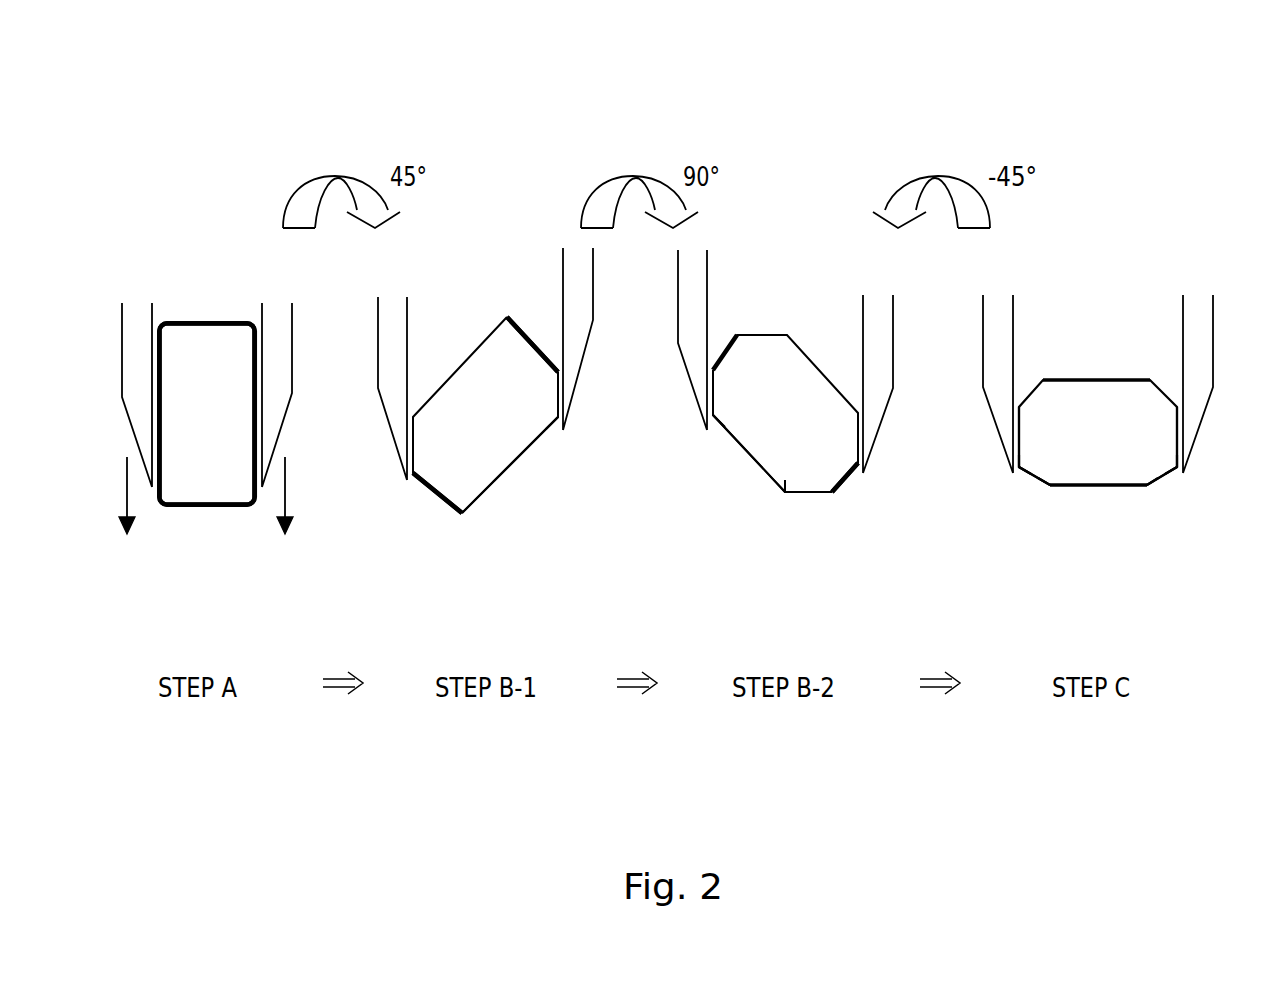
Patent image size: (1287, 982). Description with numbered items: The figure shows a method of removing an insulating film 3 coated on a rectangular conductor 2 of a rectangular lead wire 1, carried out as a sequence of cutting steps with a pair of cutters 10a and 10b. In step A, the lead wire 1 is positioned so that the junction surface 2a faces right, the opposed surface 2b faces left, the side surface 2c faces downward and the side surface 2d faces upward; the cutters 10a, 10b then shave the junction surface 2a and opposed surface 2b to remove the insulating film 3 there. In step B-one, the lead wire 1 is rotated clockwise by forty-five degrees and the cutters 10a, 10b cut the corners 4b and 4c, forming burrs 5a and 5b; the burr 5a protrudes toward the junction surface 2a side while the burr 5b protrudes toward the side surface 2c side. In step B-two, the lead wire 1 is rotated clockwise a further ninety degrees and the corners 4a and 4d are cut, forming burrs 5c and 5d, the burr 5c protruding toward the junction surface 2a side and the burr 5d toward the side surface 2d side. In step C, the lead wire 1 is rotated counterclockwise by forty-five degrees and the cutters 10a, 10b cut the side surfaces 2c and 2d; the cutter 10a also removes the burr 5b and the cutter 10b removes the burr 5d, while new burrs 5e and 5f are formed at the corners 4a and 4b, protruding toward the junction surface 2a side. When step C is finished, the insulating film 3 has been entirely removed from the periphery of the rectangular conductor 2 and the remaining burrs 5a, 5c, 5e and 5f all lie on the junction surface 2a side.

The rectangular lead wire 1 is at (207, 198).
The rectangular conductor 2 is at (217, 490).
The junction surface 2a is at (264, 437).
The opposed surface 2b is at (150, 421).
The side surface 2c is at (188, 510).
The side surface 2d is at (188, 318).
The insulating film 3 is at (205, 320).
The corner 4a is at (714, 392).
The corner 4b is at (556, 395).
The corner 4c is at (415, 440).
The corner 4d is at (856, 440).
The burr 5a is at (559, 422).
The burr 5b is at (412, 477).
The burr 5c is at (712, 431).
The burr 5d is at (864, 475).
The burr 5e is at (1018, 476).
The burr 5f is at (1178, 476).
The cutter 10a is at (138, 312).
The cutter 10b is at (273, 310).